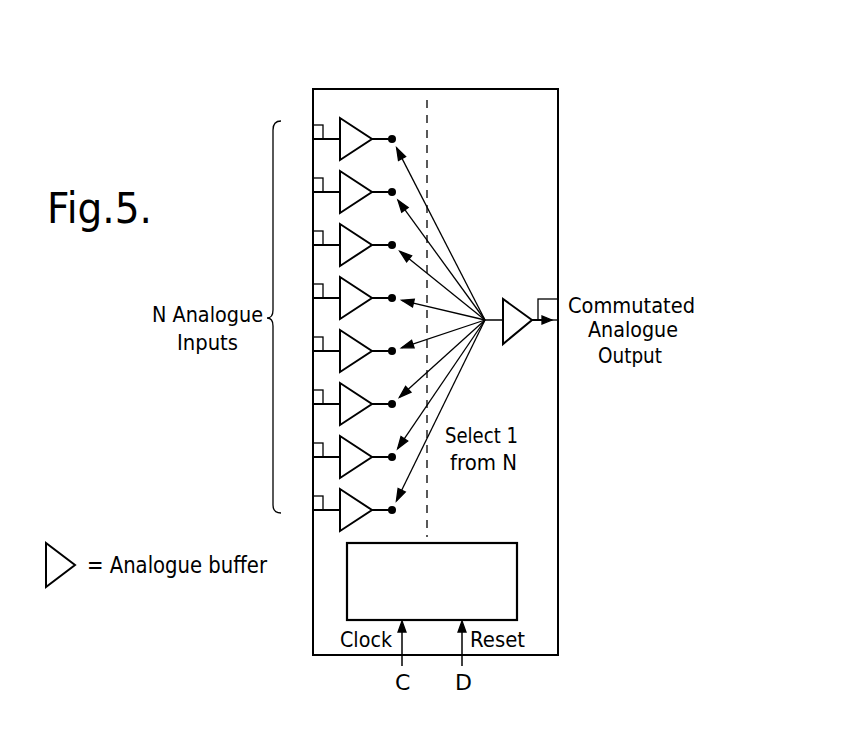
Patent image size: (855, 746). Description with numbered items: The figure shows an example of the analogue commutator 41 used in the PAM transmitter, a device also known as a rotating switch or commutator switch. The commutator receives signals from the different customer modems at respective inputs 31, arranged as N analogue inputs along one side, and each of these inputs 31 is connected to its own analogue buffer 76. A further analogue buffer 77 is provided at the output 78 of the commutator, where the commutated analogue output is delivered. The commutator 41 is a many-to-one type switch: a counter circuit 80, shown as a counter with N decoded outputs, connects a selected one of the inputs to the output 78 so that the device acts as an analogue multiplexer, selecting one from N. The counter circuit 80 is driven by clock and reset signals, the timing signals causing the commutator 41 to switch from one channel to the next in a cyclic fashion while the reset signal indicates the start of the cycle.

The analogue commutator 41 is at (513, 89).
The inputs 31 is at (313, 237).
The analogue buffer 76 is at (355, 233).
The further analogue buffer 77 is at (512, 300).
The output 78 is at (545, 299).
The counter circuit 80 is at (517, 572).